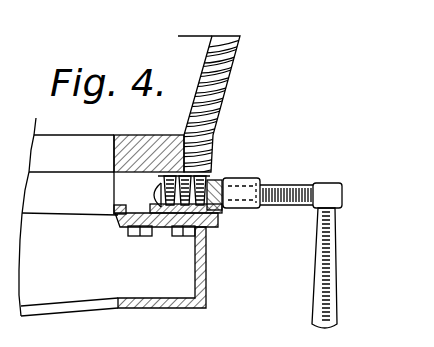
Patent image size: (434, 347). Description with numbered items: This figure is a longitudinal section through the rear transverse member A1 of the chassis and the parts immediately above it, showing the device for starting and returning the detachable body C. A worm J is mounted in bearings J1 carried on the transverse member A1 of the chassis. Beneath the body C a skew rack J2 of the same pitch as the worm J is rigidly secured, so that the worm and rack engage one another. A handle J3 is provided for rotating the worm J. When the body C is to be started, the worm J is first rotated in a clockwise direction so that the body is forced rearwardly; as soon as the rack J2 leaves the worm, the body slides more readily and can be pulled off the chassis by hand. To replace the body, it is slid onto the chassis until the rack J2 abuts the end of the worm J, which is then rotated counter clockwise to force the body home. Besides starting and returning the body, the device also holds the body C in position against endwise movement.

The body C is at (219, 85).
The worm J is at (143, 235).
The bearings J1 is at (172, 228).
The skew rack J2 is at (210, 157).
The handle J3 is at (326, 236).
The transverse member A1 is at (206, 300).